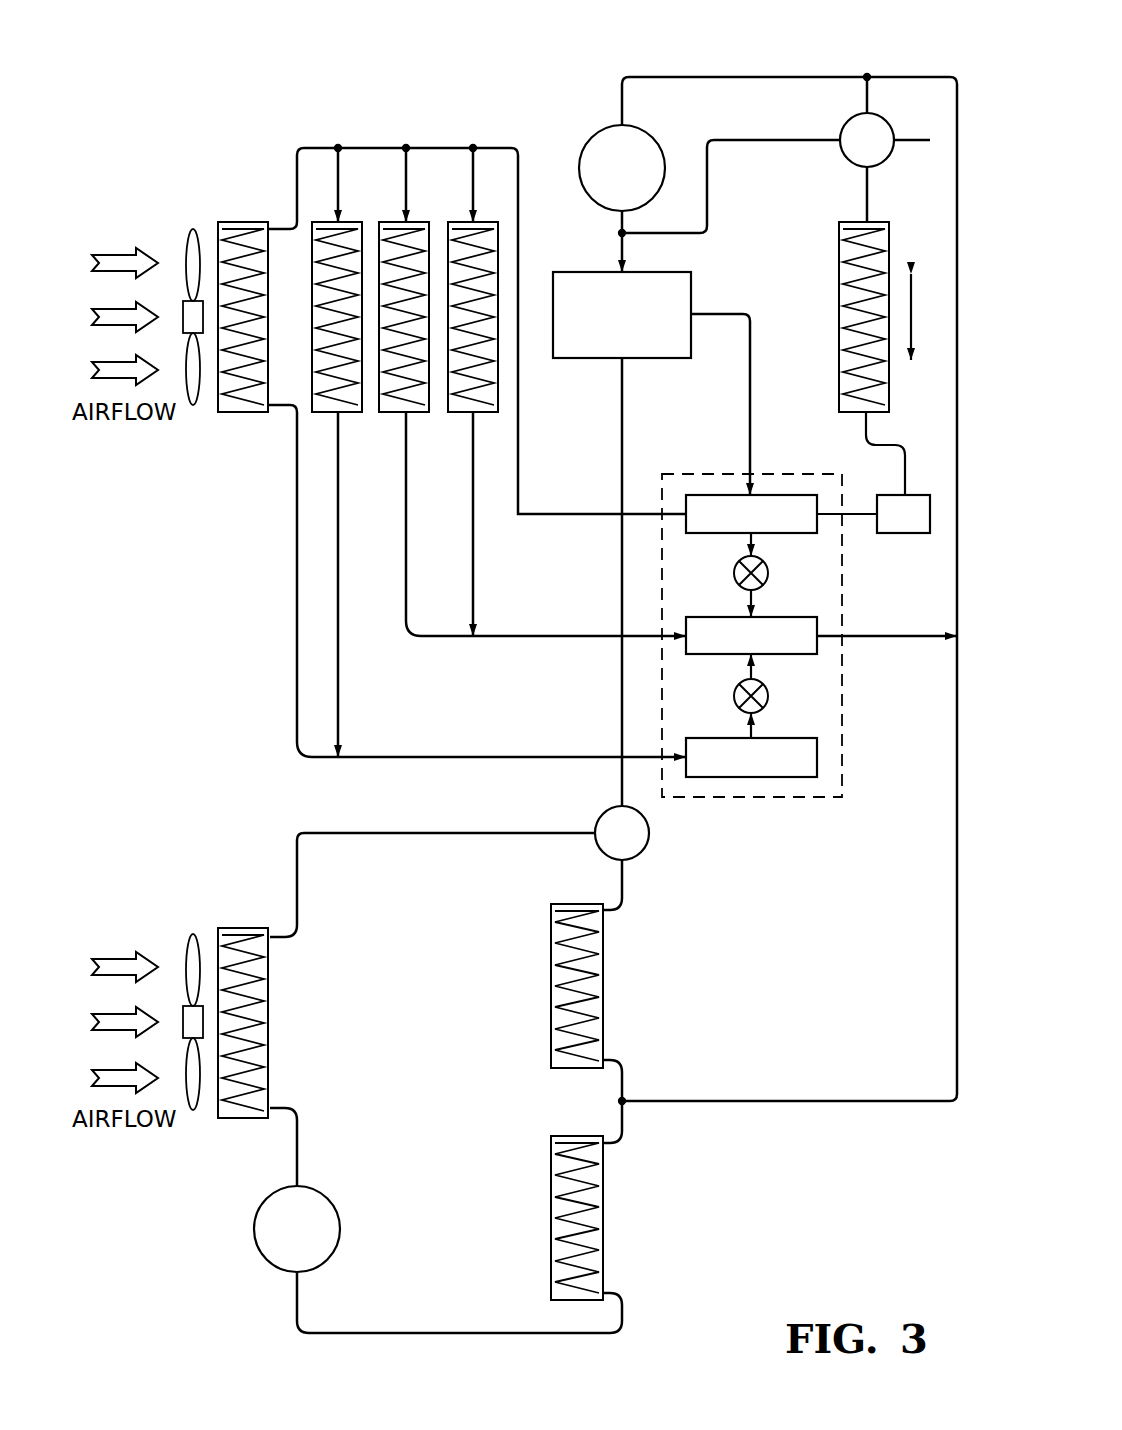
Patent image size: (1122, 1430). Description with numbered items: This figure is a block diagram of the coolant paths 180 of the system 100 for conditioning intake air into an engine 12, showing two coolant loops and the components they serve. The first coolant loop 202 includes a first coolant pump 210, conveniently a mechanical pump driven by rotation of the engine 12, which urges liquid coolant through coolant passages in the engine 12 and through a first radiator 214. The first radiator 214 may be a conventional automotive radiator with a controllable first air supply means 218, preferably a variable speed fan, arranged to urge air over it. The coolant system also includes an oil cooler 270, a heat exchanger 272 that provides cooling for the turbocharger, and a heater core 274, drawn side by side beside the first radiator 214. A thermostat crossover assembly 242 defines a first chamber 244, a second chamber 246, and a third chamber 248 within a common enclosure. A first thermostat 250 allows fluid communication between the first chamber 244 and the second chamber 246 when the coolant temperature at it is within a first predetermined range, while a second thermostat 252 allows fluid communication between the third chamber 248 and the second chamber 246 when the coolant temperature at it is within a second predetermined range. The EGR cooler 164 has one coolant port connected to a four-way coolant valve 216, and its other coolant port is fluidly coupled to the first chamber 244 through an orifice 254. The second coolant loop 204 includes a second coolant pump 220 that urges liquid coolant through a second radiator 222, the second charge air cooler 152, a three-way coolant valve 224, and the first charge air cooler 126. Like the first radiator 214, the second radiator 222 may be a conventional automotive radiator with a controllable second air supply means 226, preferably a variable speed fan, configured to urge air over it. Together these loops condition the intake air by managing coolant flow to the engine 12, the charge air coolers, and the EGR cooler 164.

The system for conditioning intake air 100 is at (297, 67).
The coolant paths 180 is at (245, 108).
The engine 12 is at (572, 272).
The first charge air cooler 126 is at (603, 1272).
The second charge air cooler 152 is at (551, 920).
The EGR cooler 164 is at (835, 260).
The first coolant loop 202 is at (702, 77).
The second coolant loop 204 is at (357, 1333).
The first coolant pump 210 is at (603, 128).
The first radiator 214 is at (222, 222).
The four-way coolant valve 216 is at (848, 118).
The first air supply means 218 is at (190, 240).
The second coolant pump 220 is at (263, 1260).
The second radiator 222 is at (222, 928).
The three-way coolant valve 224 is at (643, 855).
The second air supply means 226 is at (190, 940).
The thermostat crossover assembly 242 is at (797, 797).
The first chamber 244 is at (790, 495).
The second chamber 246 is at (800, 617).
The third chamber 248 is at (800, 738).
The first thermostat 250 is at (768, 573).
The second thermostat 252 is at (768, 696).
The orifice 254 is at (918, 495).
The oil cooler 270 is at (352, 222).
The heat exchanger 272 is at (419, 222).
The heater core 274 is at (487, 222).